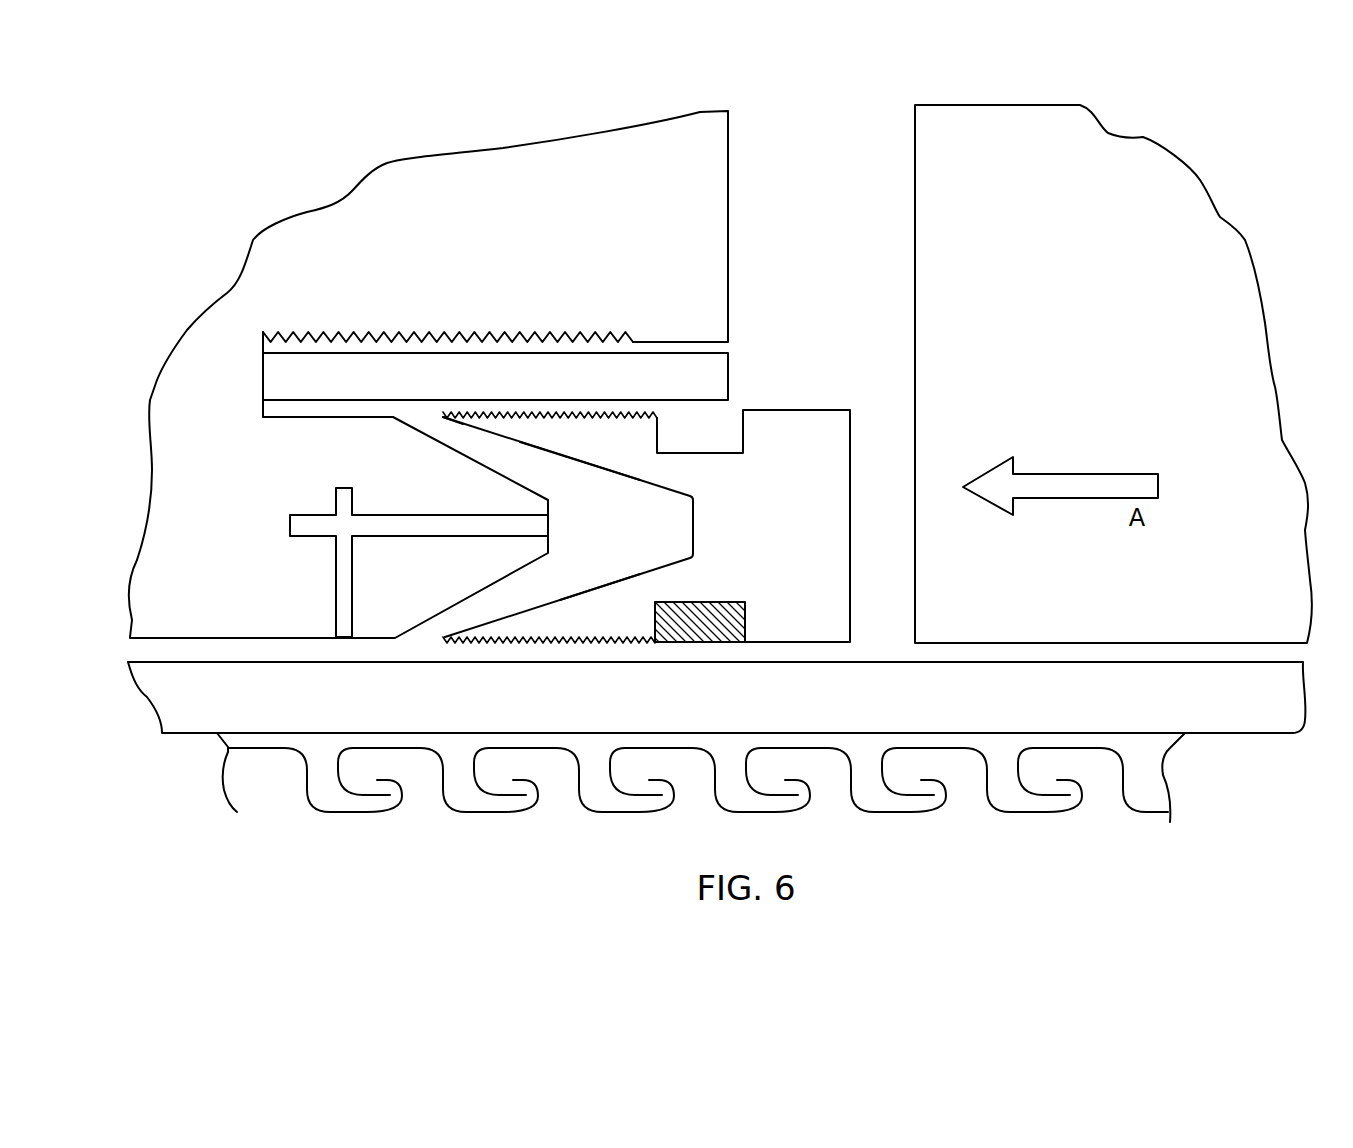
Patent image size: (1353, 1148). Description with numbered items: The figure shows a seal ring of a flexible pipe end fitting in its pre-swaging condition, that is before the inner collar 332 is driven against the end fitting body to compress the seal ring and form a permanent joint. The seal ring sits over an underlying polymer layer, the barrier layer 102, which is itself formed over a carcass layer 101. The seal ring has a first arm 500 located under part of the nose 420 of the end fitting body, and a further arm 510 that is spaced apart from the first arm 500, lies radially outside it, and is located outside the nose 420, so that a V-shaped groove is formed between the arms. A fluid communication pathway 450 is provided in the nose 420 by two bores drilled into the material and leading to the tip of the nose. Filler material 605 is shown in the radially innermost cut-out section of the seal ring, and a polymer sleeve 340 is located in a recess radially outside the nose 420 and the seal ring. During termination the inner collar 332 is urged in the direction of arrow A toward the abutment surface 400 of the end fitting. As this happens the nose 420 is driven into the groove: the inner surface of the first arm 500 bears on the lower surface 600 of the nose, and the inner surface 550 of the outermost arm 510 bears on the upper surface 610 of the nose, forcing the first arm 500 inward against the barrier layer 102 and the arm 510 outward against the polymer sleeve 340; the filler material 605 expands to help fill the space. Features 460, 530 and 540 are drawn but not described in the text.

The carcass layer 101 is at (475, 802).
The barrier layer 102 is at (1257, 720).
The inner collar 332 is at (1053, 371).
The polymer sleeve 340 is at (323, 393).
The abutment surface 400 is at (728, 213).
The nose 420 is at (413, 503).
The fluid communication pathway 450 is at (345, 593).
The gap 460 is at (343, 641).
The first arm 500 is at (597, 613).
The further arm 510 is at (590, 440).
The block 530 is at (755, 503).
The lower surface 540 is at (590, 590).
The inner surface 550 is at (573, 457).
The lower surface 600 is at (481, 590).
The filler material 605 is at (723, 608).
The upper surface 610 is at (458, 452).